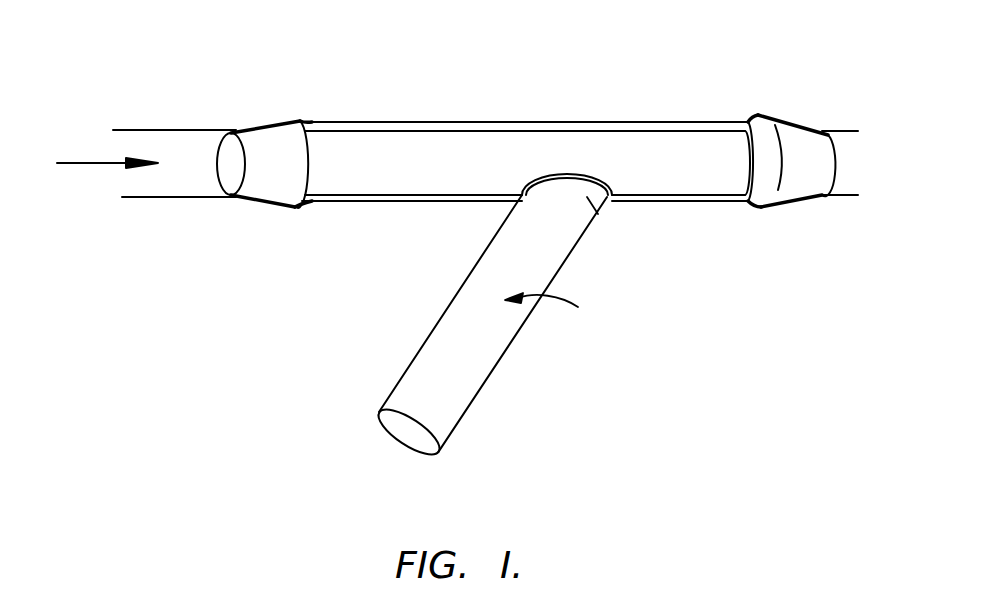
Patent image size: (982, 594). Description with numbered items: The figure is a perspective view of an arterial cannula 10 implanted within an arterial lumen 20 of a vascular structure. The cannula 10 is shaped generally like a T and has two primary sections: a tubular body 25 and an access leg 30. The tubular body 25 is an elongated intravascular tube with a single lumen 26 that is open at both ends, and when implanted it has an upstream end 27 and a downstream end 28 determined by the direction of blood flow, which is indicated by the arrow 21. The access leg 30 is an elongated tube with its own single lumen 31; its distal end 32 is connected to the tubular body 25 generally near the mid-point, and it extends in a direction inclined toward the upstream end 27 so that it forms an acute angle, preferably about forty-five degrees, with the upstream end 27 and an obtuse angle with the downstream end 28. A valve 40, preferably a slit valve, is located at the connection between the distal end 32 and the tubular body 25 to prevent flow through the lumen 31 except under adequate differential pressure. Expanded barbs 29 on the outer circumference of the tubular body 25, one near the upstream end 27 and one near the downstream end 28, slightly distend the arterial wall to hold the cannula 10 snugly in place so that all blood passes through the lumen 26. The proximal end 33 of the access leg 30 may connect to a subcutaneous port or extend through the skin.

The arterial cannula 10 is at (606, 29).
The arterial lumen 20 is at (158, 128).
The arrow 21 is at (95, 166).
The tubular body 25 is at (527, 135).
The lumen 26 is at (465, 160).
The upstream end 27 is at (258, 124).
The downstream end 28 is at (803, 125).
The expanded barbs 29 is at (300, 120).
The access leg 30 is at (437, 325).
The lumen 31 is at (559, 309).
The distal end 32 is at (598, 214).
The proximal end 33 is at (415, 437).
The valve 40 is at (562, 185).